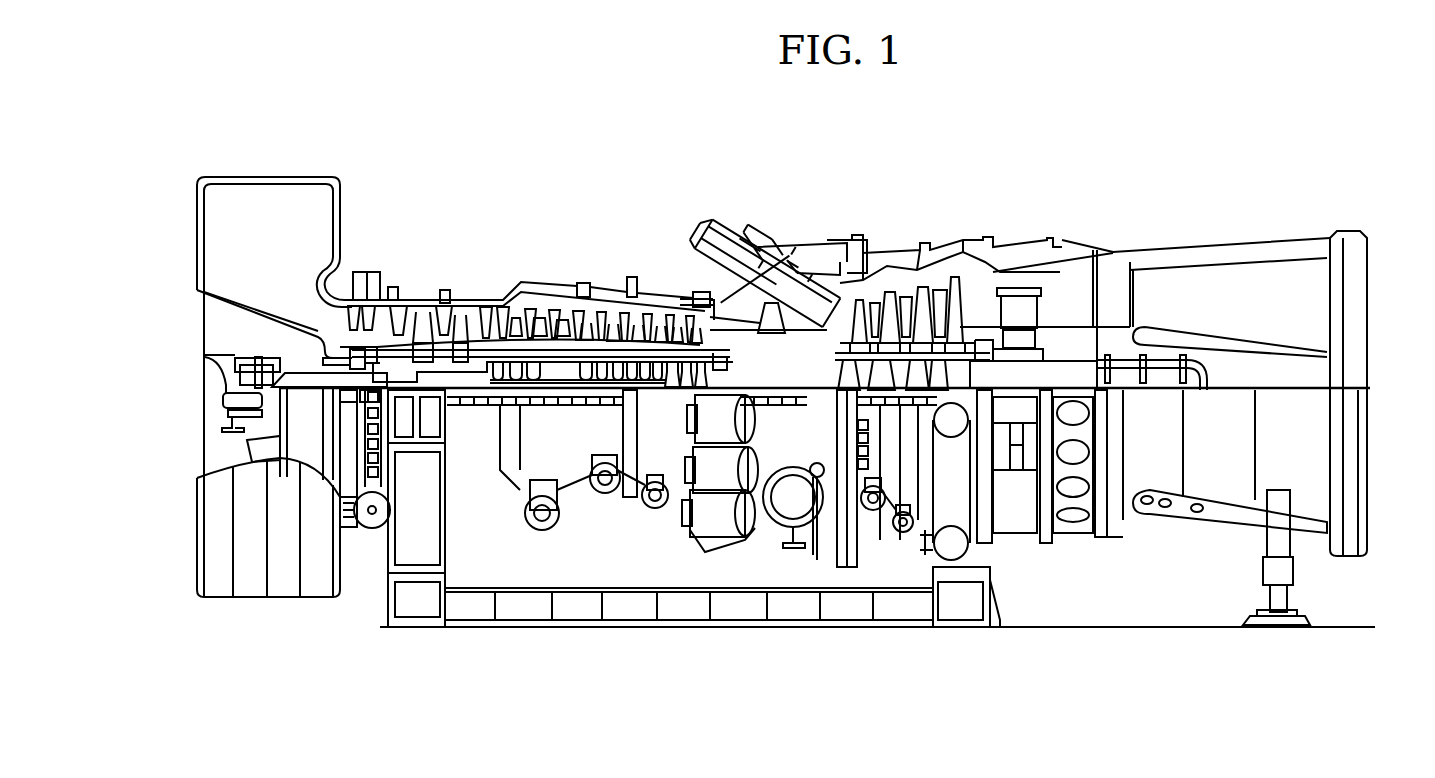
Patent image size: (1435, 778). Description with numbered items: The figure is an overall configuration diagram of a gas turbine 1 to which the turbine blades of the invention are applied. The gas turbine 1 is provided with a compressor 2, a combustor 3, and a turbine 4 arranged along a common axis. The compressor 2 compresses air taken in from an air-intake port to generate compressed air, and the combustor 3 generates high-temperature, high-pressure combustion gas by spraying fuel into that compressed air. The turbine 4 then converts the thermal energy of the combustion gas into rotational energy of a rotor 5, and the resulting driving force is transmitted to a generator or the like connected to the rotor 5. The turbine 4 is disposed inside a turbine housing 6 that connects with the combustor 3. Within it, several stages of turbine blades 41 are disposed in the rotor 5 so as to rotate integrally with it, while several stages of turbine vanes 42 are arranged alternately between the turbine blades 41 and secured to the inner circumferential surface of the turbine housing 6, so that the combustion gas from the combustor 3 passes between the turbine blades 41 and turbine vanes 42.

The gas turbine 1 is at (1182, 144).
The compressor 2 is at (478, 282).
The combustor 3 is at (760, 215).
The turbine 4 is at (913, 228).
The turbine blades 41 is at (889, 300).
The turbine vanes 42 is at (875, 302).
The rotor 5 is at (1063, 372).
The turbine housing 6 is at (958, 248).